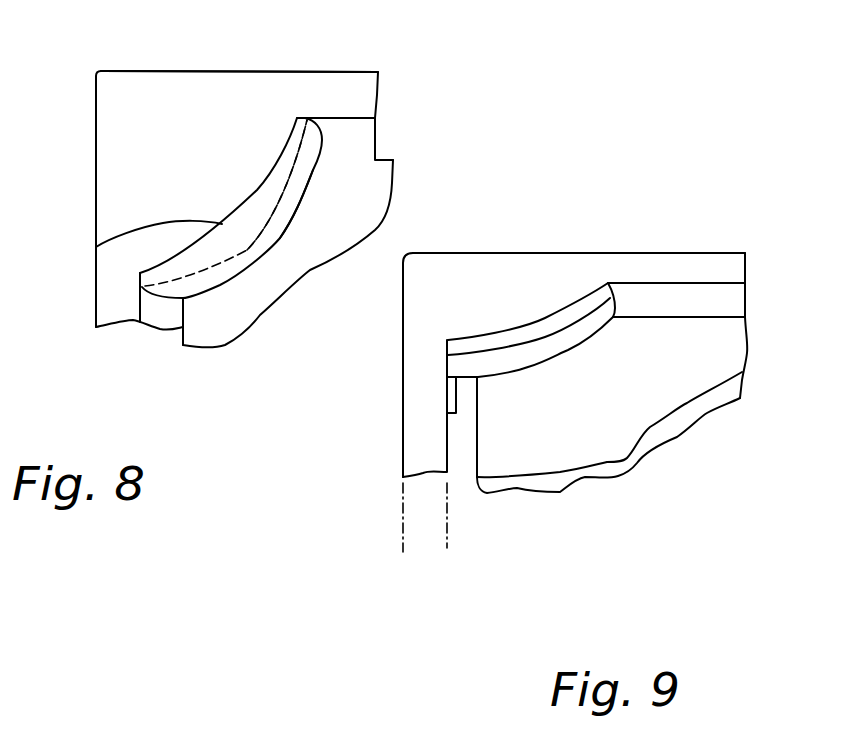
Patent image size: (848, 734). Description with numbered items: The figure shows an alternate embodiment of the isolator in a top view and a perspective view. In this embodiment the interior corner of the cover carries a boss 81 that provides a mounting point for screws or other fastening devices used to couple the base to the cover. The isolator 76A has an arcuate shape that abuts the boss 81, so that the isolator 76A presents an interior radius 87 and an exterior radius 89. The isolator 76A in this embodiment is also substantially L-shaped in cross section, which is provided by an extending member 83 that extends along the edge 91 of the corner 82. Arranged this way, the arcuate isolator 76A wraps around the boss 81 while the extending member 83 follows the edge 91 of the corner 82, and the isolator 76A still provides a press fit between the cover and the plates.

In FIG. 8, the isolator 76A is at (322, 142).
In FIG. 9, the isolator 76A is at (603, 298).
In FIG. 8, the boss 81 is at (260, 128).
In FIG. 9, the boss 81 is at (566, 290).
In FIG. 8, the corner 82 is at (243, 298).
In FIG. 9, the extending member 83 is at (455, 395).
In FIG. 8, the interior radius 87 is at (96, 247).
In FIG. 8, the exterior radius 89 is at (302, 207).
In FIG. 8, the edge 91 is at (266, 233).